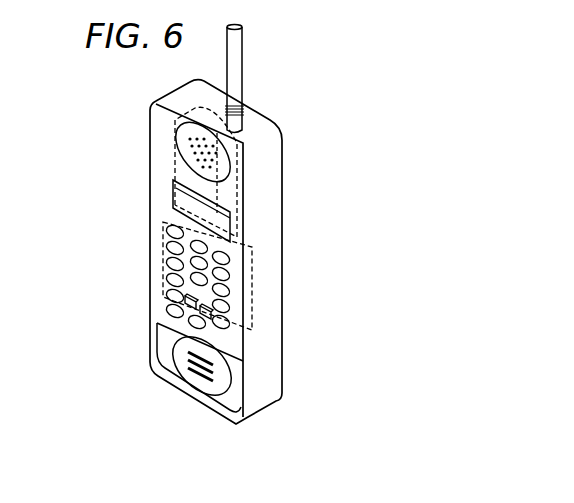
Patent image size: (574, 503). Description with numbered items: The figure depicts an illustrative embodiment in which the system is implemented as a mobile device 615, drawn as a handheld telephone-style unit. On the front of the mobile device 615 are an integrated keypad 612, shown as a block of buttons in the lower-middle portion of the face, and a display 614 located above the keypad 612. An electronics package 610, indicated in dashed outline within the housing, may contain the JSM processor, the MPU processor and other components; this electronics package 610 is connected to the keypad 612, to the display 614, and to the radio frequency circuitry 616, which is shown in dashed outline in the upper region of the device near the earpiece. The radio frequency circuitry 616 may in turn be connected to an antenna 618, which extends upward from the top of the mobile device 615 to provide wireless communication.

The electronics package 610 is at (253, 283).
The keypad 612 is at (165, 262).
The display 614 is at (173, 205).
The mobile device 615 is at (272, 367).
The radio frequency circuitry 616 is at (176, 170).
The antenna 618 is at (243, 57).